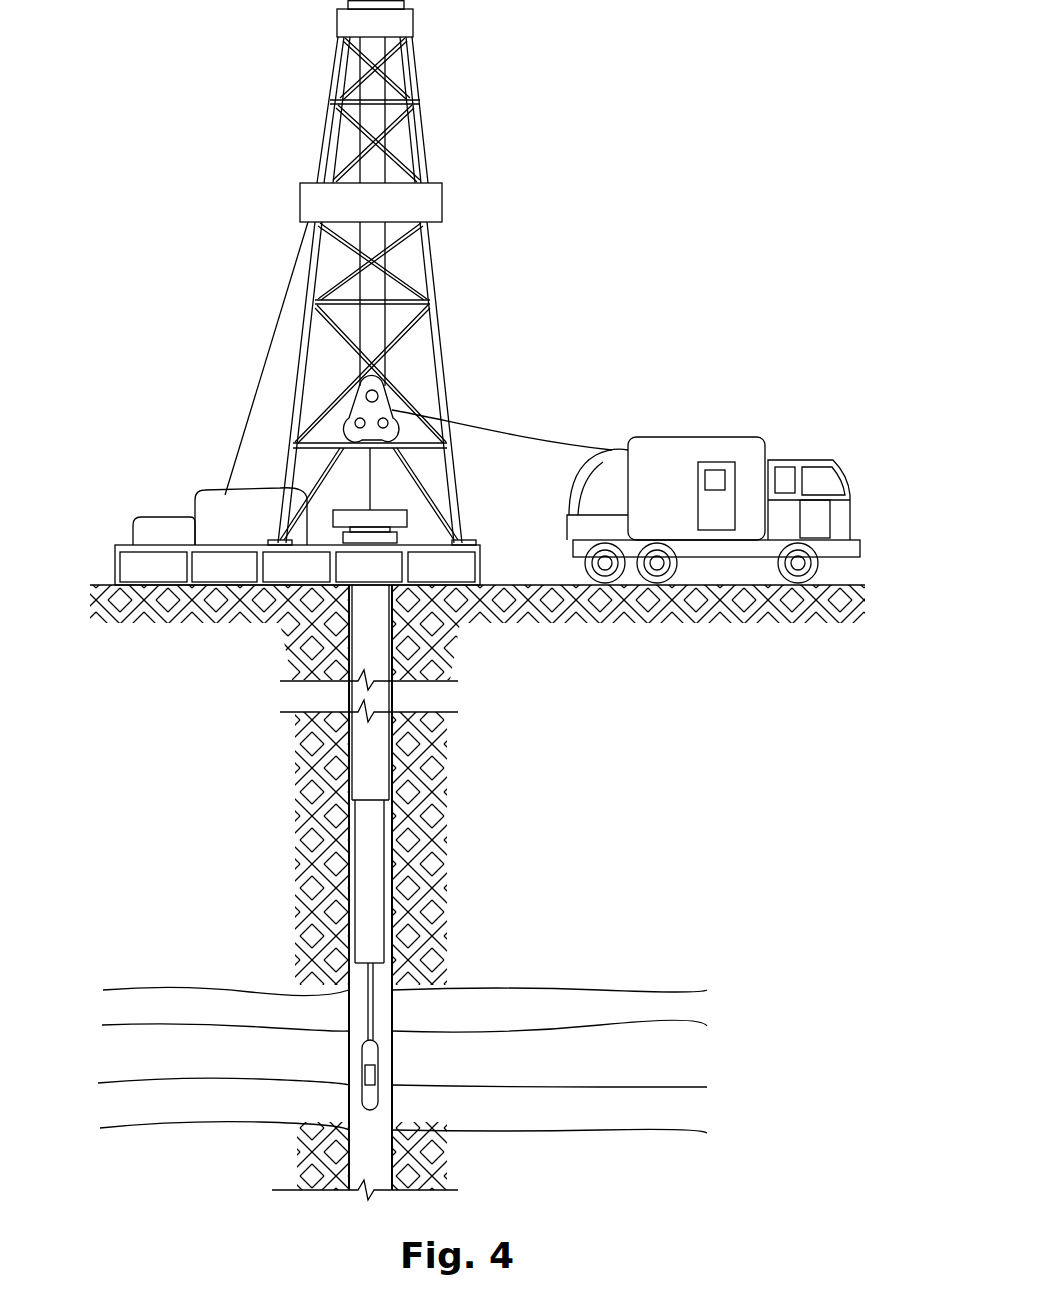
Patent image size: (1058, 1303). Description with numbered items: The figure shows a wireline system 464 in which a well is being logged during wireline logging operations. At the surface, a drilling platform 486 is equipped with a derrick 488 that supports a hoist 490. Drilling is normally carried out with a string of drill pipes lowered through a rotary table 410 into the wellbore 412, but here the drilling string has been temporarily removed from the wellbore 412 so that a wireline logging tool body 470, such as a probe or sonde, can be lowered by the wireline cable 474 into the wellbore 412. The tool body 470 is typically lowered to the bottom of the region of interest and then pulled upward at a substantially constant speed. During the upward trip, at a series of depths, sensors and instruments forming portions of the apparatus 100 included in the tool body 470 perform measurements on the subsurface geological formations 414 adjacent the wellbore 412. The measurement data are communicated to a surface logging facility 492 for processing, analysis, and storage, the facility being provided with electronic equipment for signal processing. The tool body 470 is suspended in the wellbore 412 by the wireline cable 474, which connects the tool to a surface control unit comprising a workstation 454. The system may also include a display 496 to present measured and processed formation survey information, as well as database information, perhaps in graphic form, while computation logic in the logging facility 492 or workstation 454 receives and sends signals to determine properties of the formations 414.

The wireline system 464 is at (638, 220).
The derrick 488 is at (463, 531).
The hoist 490 is at (390, 405).
The wireline cable 474 is at (497, 432).
The rotary table 410 is at (400, 508).
The drilling platform 486 is at (480, 571).
The wellbore 412 is at (349, 1000).
The wireline logging tool body 470 is at (380, 1045).
The apparatus 100 is at (375, 1075).
The subsurface geological formations 414 is at (718, 987).
The surface logging facility 492 is at (676, 437).
The workstation 454 is at (698, 505).
The display 496 is at (718, 465).